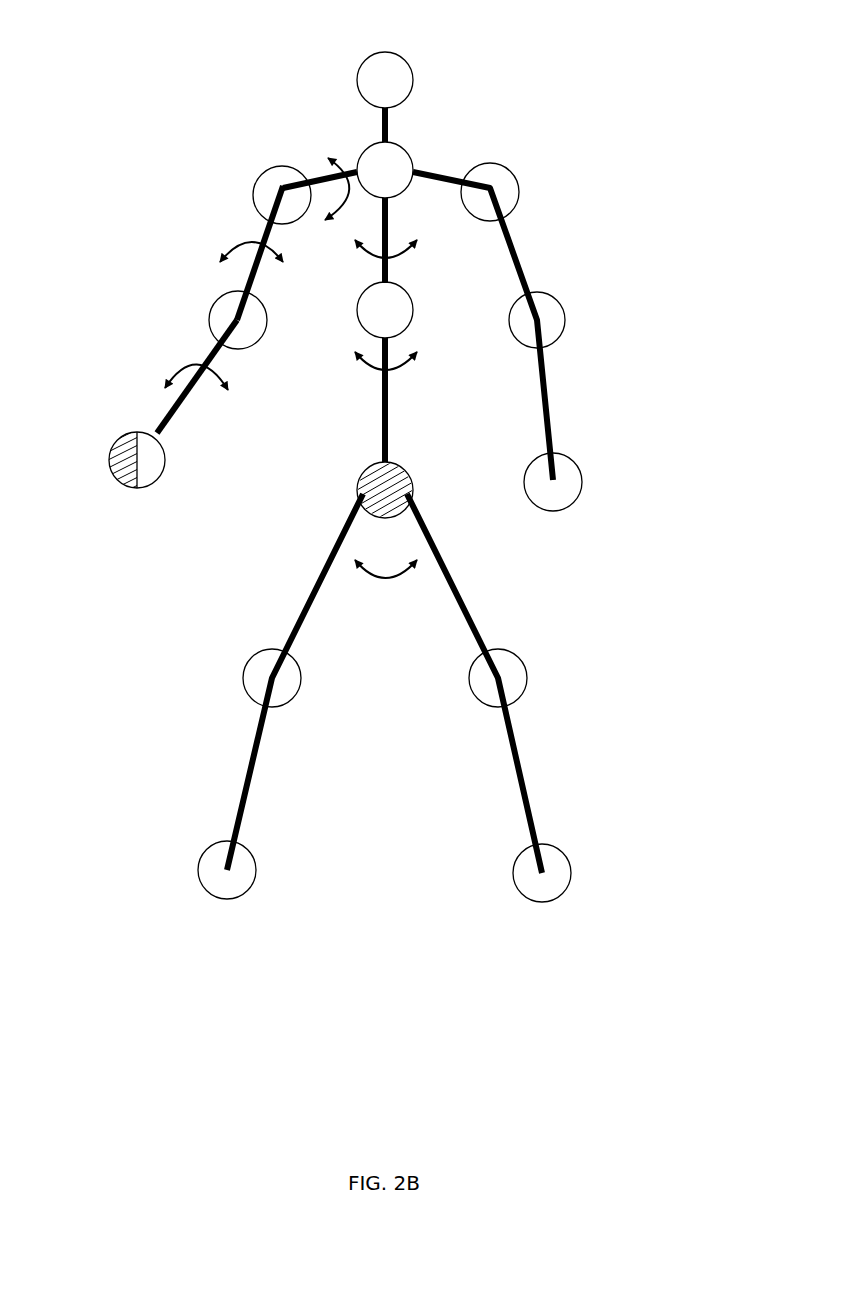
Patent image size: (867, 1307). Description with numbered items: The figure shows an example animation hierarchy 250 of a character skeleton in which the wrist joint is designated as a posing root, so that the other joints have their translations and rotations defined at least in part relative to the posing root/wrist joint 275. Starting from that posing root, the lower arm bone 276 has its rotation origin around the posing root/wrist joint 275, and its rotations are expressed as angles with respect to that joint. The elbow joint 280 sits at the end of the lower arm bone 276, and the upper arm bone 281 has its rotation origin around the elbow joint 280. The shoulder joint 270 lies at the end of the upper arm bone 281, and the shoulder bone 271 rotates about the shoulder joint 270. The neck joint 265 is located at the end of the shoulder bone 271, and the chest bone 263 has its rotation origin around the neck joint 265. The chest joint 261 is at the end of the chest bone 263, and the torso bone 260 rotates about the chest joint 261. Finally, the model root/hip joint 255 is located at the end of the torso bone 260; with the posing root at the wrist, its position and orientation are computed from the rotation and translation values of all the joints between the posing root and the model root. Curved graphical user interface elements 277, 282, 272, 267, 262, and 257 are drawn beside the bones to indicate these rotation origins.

The animation hierarchy 250 is at (314, 460).
The model root/hip joint 255 is at (342, 489).
The graphical user interface element 257 is at (388, 580).
The torso bone 260 is at (388, 410).
The chest joint 261 is at (413, 310).
The graphical user interface element 262 is at (400, 370).
The chest bone 263 is at (388, 230).
The neck joint 265 is at (405, 148).
The graphical user interface element 267 is at (415, 250).
The shoulder joint 270 is at (258, 178).
The shoulder bone 271 is at (290, 113).
The graphical user interface element 272 is at (328, 228).
The posing root/wrist joint 275 is at (110, 457).
The lower arm bone 276 is at (137, 376).
The graphical user interface element 277 is at (218, 383).
The elbow joint 280 is at (208, 320).
The upper arm bone 281 is at (160, 238).
The graphical user interface element 282 is at (240, 243).